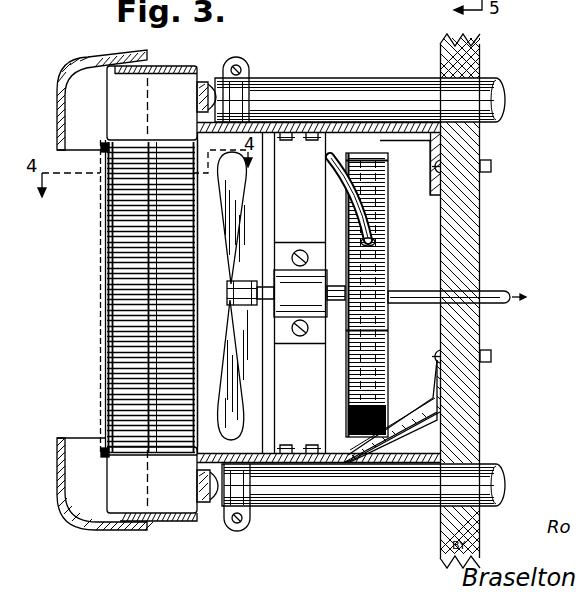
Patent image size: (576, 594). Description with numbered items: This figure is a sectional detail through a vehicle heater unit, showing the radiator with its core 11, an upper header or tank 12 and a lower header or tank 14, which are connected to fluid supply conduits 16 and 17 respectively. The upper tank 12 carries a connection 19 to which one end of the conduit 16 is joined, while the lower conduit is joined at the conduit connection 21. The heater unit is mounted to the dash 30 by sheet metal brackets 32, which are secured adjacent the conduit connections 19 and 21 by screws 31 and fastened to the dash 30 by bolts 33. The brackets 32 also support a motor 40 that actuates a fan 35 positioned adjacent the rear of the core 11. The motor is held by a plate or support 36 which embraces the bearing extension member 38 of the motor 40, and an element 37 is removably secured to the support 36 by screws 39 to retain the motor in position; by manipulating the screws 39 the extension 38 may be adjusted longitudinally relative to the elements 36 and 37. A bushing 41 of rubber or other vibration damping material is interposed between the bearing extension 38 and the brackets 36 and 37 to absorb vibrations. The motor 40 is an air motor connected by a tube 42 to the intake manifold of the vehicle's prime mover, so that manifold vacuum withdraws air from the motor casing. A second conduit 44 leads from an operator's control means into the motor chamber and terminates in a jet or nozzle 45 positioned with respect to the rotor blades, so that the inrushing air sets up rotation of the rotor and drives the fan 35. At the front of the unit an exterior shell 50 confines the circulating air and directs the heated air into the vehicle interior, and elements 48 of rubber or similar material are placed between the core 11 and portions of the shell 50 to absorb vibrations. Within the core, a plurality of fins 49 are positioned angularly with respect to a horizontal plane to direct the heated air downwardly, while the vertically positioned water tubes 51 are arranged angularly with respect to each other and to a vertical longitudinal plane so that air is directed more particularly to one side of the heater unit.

The core 11 is at (127, 297).
The upper header or tank 12 is at (172, 74).
The lower header or tank 14 is at (172, 512).
The fluid supply conduit 16 is at (373, 92).
The fluid supply conduit 17 is at (412, 490).
The connection 19 is at (236, 96).
The conduit connection 21 is at (226, 522).
The dash 30 is at (483, 210).
The screw 31 is at (210, 502).
The bracket 32 is at (455, 136).
The bolt 33 is at (492, 168).
The fan 35 is at (228, 362).
The plate or support 36 is at (382, 295).
The element 37 is at (356, 340).
The bearing extension member 38 is at (330, 292).
The screw 39 is at (300, 250).
The motor 40 is at (374, 203).
The bushing 41 is at (258, 282).
The tube 42 is at (490, 295).
The conduit 44 is at (386, 164).
The jet or nozzle 45 is at (376, 242).
The element 48 is at (105, 145).
The fin 49 is at (106, 378).
The exterior shell 50 is at (62, 500).
The water tube 51 is at (122, 322).